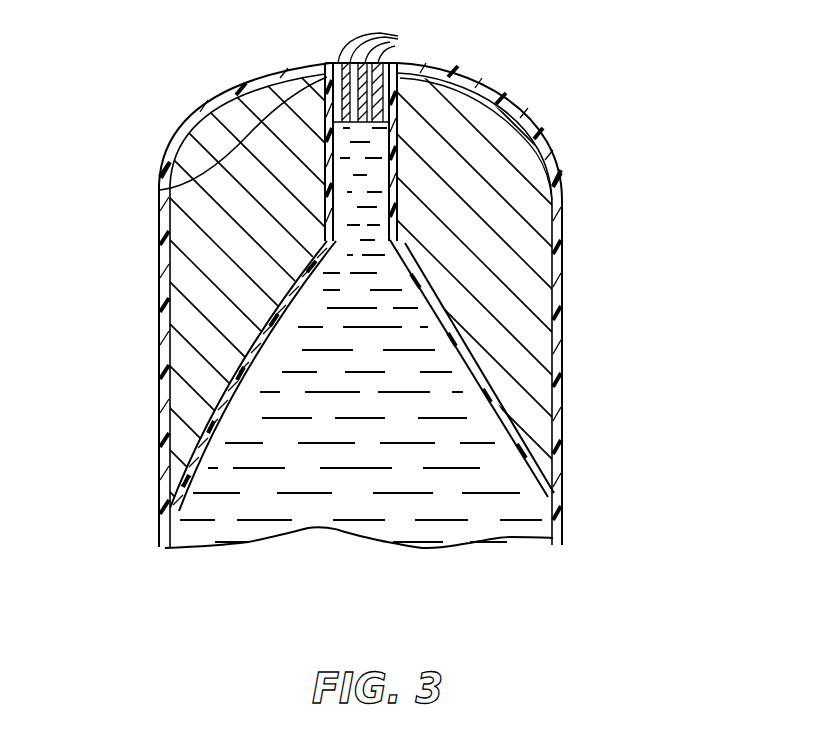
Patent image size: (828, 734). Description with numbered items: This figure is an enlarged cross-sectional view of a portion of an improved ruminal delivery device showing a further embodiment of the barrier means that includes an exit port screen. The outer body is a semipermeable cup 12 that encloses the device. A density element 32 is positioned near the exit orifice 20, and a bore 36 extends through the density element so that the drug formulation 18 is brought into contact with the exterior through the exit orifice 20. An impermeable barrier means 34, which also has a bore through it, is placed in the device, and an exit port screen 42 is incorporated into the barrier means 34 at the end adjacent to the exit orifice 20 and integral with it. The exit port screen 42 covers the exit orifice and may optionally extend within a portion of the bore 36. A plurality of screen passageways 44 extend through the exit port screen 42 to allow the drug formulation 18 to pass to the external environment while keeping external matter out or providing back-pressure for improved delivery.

The semipermeable cup 12 is at (557, 298).
The drug formulation 18 is at (402, 523).
The exit orifice 20 is at (330, 63).
The density element 32 is at (200, 253).
The impermeable barrier means 34 is at (398, 198).
The bore 36 is at (380, 167).
The exit port screen 42 is at (160, 190).
The screen passageways 44 is at (398, 41).